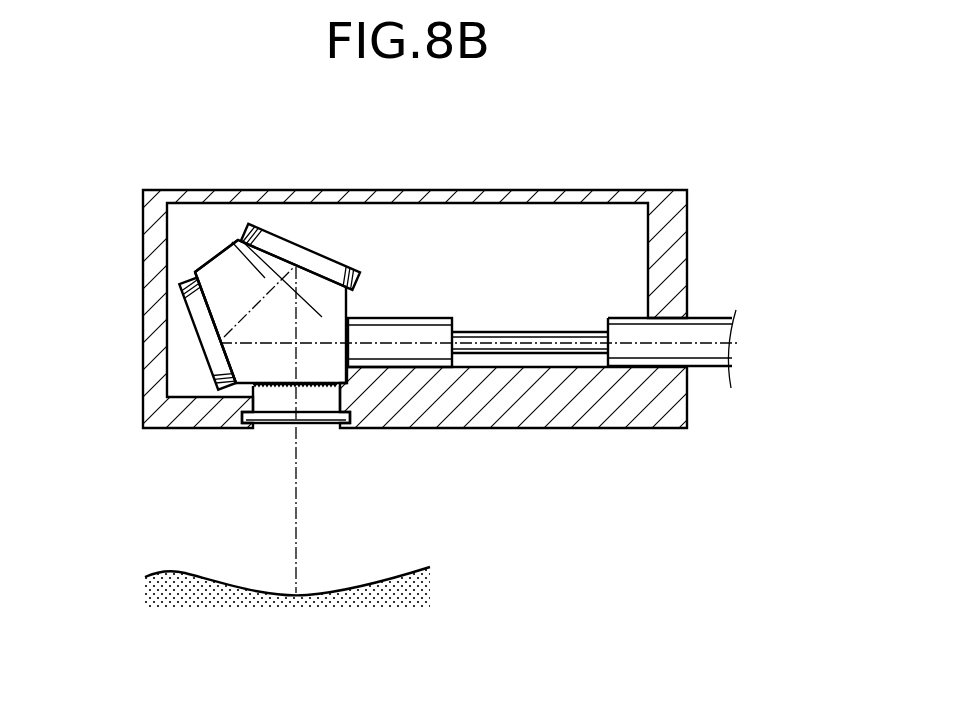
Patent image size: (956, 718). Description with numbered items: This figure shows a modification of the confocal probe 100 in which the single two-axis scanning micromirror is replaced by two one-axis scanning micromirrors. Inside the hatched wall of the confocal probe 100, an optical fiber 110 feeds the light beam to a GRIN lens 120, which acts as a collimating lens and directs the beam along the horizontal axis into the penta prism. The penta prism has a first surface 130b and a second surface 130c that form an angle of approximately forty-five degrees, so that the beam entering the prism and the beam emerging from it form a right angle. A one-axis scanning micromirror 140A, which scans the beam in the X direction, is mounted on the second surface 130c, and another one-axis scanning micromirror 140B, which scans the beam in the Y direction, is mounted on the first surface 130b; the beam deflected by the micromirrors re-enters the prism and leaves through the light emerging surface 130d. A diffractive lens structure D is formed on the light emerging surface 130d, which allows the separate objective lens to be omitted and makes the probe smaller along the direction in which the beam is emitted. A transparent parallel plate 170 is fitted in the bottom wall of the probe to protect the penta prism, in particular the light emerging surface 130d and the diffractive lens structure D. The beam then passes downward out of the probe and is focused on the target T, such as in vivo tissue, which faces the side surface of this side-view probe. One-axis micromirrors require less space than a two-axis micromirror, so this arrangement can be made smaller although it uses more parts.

The confocal probe 100 is at (559, 163).
The optical fiber 110 is at (573, 331).
The GRIN lens 120 is at (425, 316).
The first surface 130b is at (212, 294).
The second surface 130c is at (283, 256).
The light emerging surface 130d is at (262, 416).
The one-axis scanning micromirror 140A is at (320, 260).
The one-axis scanning micromirror 140B is at (207, 342).
The transparent parallel plate 170 is at (321, 418).
The diffractive lens structure D is at (270, 398).
The target T is at (373, 583).